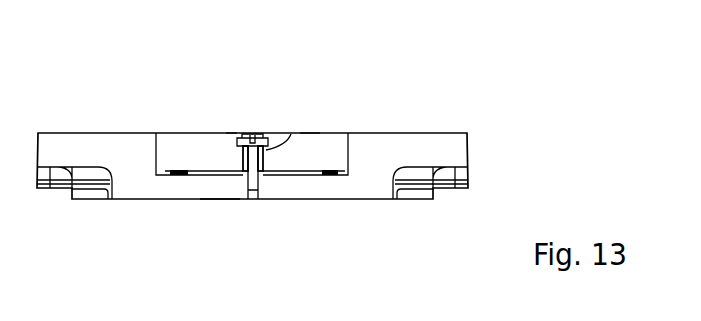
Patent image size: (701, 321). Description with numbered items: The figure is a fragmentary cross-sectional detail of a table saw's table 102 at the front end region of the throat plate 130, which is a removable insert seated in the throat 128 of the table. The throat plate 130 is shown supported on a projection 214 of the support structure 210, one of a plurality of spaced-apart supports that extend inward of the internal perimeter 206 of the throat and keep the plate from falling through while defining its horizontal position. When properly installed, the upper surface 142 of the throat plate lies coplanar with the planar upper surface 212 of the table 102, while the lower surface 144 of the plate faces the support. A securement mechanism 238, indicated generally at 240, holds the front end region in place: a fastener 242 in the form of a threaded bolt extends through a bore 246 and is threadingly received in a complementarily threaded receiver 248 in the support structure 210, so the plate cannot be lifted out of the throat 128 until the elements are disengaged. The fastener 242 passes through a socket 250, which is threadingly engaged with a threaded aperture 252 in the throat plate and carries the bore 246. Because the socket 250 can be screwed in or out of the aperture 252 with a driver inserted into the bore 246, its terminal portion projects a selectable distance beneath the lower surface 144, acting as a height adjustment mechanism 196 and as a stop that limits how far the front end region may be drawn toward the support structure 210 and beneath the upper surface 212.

The table 102 is at (452, 131).
The opening 128 is at (194, 153).
The throat plate 130 is at (323, 131).
The upper surface 142 is at (308, 133).
The lower surface 144 is at (310, 175).
The height adjustment mechanism 196 is at (273, 160).
The internal perimeter 206 is at (162, 133).
The support structure 210 is at (220, 200).
The upper surface 212 is at (407, 133).
The projection 214 is at (203, 173).
The securement mechanism 238 is at (229, 128).
The securement mechanism 240 is at (243, 130).
The fastener 242 is at (255, 137).
The bore 246 is at (262, 170).
The receiver 248 is at (253, 200).
The socket 250 is at (291, 134).
The threaded aperture 252 is at (260, 172).